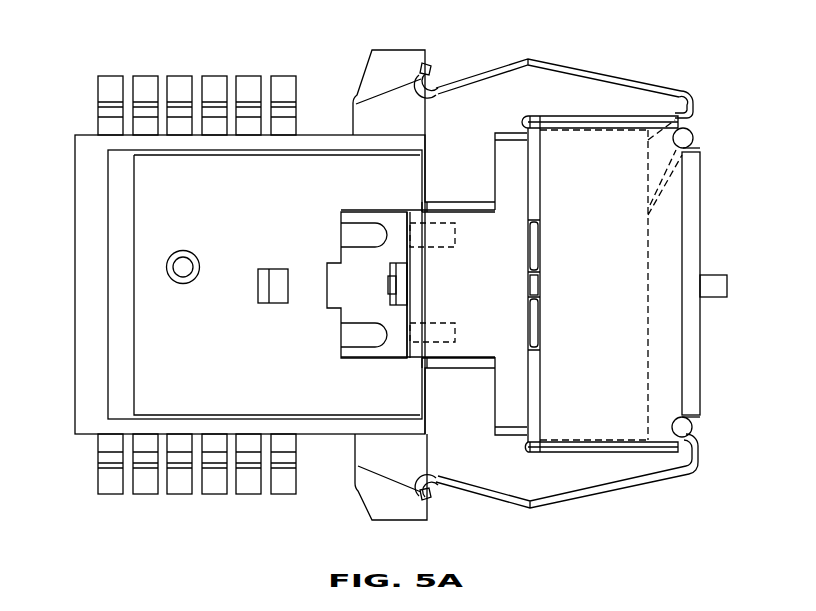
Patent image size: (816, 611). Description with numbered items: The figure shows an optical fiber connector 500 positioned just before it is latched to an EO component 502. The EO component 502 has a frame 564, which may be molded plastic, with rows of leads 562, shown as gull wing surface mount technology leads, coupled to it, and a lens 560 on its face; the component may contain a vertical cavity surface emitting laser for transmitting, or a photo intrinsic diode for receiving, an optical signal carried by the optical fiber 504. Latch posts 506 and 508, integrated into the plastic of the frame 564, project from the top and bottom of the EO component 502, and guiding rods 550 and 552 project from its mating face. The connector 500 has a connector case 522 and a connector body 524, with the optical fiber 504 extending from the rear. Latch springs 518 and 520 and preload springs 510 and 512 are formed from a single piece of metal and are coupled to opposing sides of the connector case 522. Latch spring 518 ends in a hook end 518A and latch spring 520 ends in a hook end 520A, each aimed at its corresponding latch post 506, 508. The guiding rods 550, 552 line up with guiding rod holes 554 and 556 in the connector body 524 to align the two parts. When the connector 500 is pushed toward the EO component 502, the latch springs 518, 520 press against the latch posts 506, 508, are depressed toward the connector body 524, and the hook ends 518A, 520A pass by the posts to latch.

The optical fiber connector 500 is at (764, 158).
The EO component 502 is at (63, 415).
The optical fiber 504 is at (727, 288).
The latch post 506 is at (400, 56).
The latch post 508 is at (374, 500).
The preload spring 510 is at (668, 188).
The preload spring 512 is at (670, 368).
The latch spring 518 is at (592, 66).
The hook end 518A is at (437, 78).
The latch spring 520 is at (618, 488).
The hook end 520A is at (433, 497).
The connector case 522 is at (692, 256).
The connector body 524 is at (672, 125).
The guiding rod 550 is at (355, 232).
The guiding rod 552 is at (355, 335).
The guiding rod hole 554 is at (438, 244).
The guiding rod hole 556 is at (440, 332).
The lens 560 is at (152, 310).
The leads 562 is at (113, 483).
The frame 564 is at (82, 240).